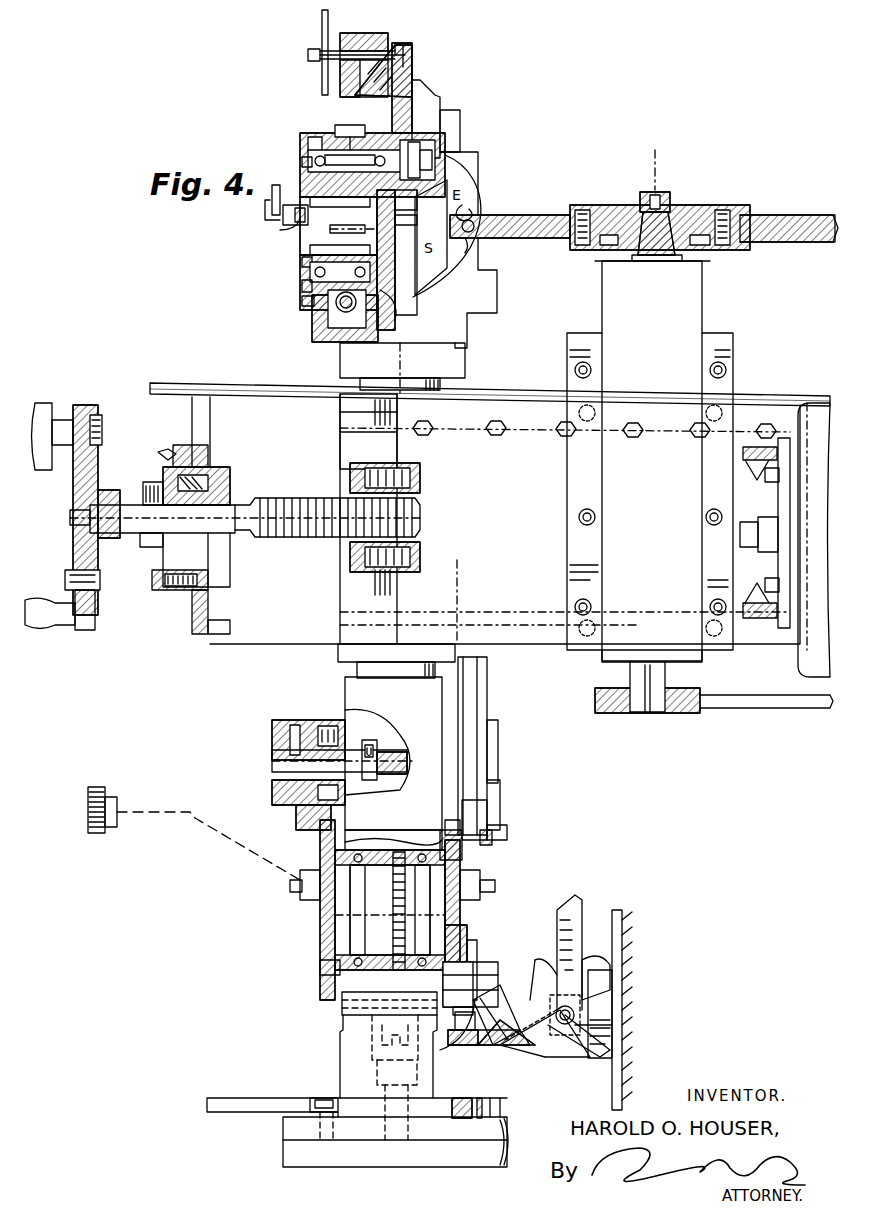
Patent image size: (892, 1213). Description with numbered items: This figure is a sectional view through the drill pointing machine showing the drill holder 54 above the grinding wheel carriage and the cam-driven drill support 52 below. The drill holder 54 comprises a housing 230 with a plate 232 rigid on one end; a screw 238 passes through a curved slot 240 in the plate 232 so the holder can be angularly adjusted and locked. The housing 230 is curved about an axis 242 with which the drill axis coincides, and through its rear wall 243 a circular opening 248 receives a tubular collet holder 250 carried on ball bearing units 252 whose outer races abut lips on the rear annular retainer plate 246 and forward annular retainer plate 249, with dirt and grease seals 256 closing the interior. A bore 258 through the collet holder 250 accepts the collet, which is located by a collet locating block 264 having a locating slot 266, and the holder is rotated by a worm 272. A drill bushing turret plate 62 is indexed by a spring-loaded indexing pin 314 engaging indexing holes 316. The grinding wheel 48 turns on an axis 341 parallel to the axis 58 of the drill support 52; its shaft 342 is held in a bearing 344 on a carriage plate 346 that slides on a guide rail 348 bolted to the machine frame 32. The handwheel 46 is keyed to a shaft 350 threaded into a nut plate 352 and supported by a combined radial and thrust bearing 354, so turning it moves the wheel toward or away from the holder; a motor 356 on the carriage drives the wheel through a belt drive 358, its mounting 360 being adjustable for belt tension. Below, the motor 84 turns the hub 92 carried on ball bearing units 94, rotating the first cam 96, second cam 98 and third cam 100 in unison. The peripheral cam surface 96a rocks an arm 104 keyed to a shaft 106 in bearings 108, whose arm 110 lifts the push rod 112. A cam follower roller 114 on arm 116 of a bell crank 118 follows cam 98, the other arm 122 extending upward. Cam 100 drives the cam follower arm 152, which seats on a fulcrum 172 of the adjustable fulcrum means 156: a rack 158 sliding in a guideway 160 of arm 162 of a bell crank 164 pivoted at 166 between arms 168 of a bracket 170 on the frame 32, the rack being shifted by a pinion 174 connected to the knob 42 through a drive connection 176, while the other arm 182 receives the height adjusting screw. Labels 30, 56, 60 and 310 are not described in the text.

The work supporting table assembly 30 is at (626, 163).
The machine frame 32 is at (637, 986).
The knob 42 is at (102, 786).
The handwheel 46 is at (80, 410).
The grinding wheel 48 is at (805, 219).
The drill support 52 is at (458, 178).
The drill holder 54 is at (299, 133).
The wheel head slide 56 is at (330, 378).
The axis 58 is at (400, 375).
The grinding wheel 60 is at (472, 153).
The drill bushing turret plate 62 is at (418, 90).
The motor 84 is at (357, 1091).
The hub 92 is at (390, 911).
The ball bearing units 94 is at (408, 835).
The first cam 96 is at (322, 850).
The peripheral cam surface 96a is at (320, 966).
The second cam 98 is at (463, 947).
The third cam 100 is at (473, 975).
The arm 104 is at (296, 813).
The shaft 106 is at (282, 760).
The bearings 108 is at (340, 720).
The arm 110 is at (395, 752).
The push rod 112 is at (373, 739).
The cam follower roller 114 is at (478, 798).
The arm 116 is at (475, 806).
The bell crank 118 is at (493, 803).
The arm 122 is at (480, 698).
The cam follower arm 152 is at (488, 990).
The adjustable fulcrum means 156 is at (570, 1068).
The rack 158 is at (463, 1045).
The guideway 160 is at (474, 1035).
The arm 162 is at (502, 1048).
The bell crank 164 is at (533, 1057).
The pivot 166 is at (575, 1025).
The arms 168 is at (608, 951).
The bracket 170 is at (605, 1006).
The fulcrum 172 is at (488, 1050).
The pinion 174 is at (502, 1000).
The drive connection 176 is at (270, 872).
The arm 182 is at (581, 910).
The housing 230 is at (295, 358).
The plate 232 is at (466, 262).
The screw 238 is at (493, 215).
The curved slot 240 is at (478, 205).
The axis 242 is at (336, 226).
The rear wall 243 is at (312, 322).
The rear annular retainer plate 246 is at (302, 284).
The circular opening 248 is at (303, 296).
The forward annular retainer plate 249 is at (397, 300).
The collet holder 250 is at (303, 270).
The ball bearing units 252 is at (338, 190).
The dirt and grease seals 256 is at (303, 162).
The bore 258 is at (305, 223).
The collet locating block 264 is at (272, 204).
The locating slot 266 is at (278, 220).
The worm 272 is at (346, 310).
The worm shaft 310 is at (396, 50).
The spring-loaded indexing pin 314 is at (288, 48).
The indexing holes 316 is at (408, 72).
The axis 341 is at (656, 170).
The shaft 342 is at (655, 254).
The bearing 344 is at (650, 461).
The carriage plate 346 is at (490, 530).
The guide rail 348 is at (368, 431).
The shaft 350 is at (238, 502).
The nut plate 352 is at (355, 490).
The combined radial and thrust bearing 354 is at (233, 477).
The motor 356 is at (800, 656).
The belt drive 358 is at (745, 702).
The mounting 360 is at (743, 548).